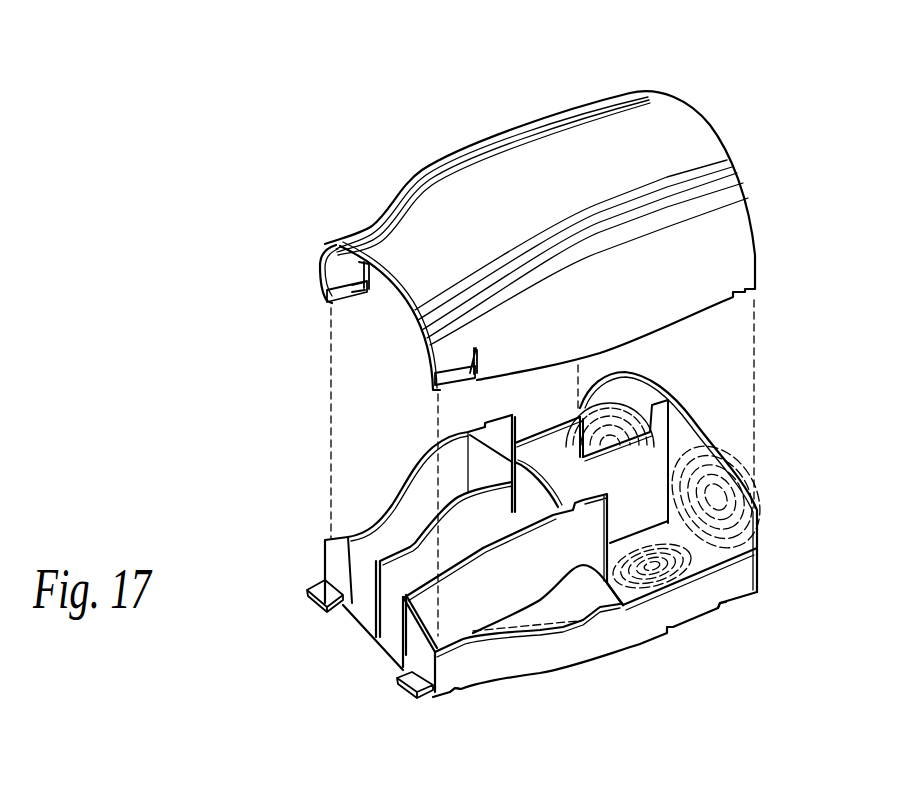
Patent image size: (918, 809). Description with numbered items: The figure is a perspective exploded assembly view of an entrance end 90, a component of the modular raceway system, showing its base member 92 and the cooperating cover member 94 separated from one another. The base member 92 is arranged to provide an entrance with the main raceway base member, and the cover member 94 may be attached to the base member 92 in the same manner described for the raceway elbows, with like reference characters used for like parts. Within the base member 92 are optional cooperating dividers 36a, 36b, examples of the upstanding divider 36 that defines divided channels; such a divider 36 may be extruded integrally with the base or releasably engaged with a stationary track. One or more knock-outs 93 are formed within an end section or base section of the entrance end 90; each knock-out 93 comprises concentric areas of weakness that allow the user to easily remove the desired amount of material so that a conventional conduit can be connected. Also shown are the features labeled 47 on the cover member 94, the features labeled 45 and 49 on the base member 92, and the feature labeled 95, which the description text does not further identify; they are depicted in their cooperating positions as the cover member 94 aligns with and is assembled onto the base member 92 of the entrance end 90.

The cover member 94 is at (728, 111).
The base member 92 is at (611, 637).
The entrance end 90 is at (272, 432).
The cover latch tabs 47 is at (363, 301).
The base latch notches 45 is at (446, 692).
The mounting tabs 49 is at (307, 596).
The divider 36 is at (463, 620).
The cooperating divider 36a is at (357, 600).
The cooperating divider 36b is at (392, 615).
The interior panels 95 is at (480, 510).
The knock-outs 93 is at (662, 575).